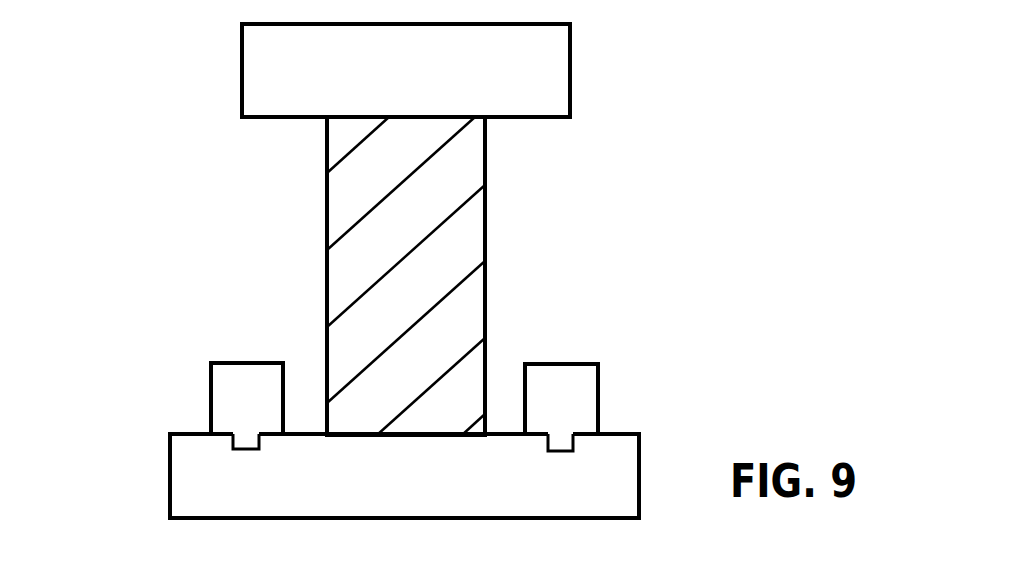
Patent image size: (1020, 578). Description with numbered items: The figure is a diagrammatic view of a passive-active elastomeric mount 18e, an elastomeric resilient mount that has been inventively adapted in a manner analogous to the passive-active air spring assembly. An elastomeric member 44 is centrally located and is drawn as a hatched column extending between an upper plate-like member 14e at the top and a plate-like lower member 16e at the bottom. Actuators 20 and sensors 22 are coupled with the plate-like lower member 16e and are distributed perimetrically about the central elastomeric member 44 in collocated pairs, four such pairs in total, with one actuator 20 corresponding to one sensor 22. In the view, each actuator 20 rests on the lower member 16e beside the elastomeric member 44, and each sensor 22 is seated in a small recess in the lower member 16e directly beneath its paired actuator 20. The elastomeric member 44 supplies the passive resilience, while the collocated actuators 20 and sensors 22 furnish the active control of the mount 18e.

The upper member 14e is at (297, 75).
The elastomeric member 44 is at (470, 233).
The plate-like lower member 16e is at (200, 480).
The actuators 20 is at (231, 404).
The sensors 22 is at (263, 448).
The passive-active elastomeric mount 18e is at (717, 108).